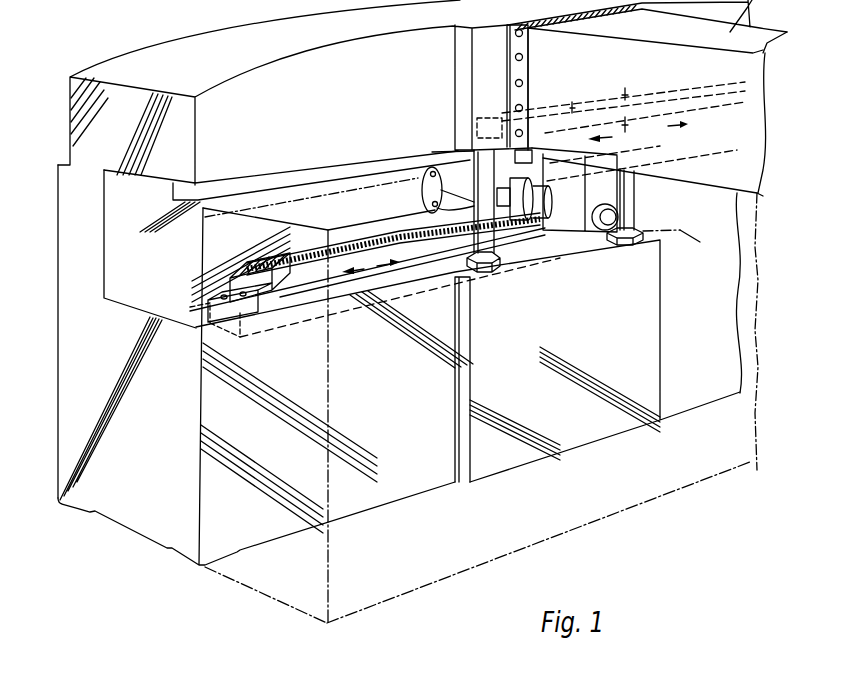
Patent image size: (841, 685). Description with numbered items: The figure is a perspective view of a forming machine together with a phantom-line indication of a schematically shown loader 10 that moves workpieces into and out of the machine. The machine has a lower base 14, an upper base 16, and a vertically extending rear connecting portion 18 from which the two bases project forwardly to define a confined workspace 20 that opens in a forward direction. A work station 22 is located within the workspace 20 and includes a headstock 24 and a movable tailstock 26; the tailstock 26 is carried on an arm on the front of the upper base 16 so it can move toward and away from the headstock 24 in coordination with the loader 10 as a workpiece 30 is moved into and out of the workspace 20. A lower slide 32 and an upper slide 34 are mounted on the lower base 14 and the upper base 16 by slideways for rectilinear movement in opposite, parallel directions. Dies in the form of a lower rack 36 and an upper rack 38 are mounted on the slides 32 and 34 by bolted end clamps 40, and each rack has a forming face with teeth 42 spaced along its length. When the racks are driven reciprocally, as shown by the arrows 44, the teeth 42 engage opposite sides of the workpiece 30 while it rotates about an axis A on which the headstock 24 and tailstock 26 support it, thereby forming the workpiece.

The loader 10 is at (283, 613).
The lower base 14 is at (132, 507).
The upper base 16 is at (133, 103).
The rear connecting portion 18 is at (70, 281).
The workspace 20 is at (152, 275).
The work station 22 is at (412, 185).
The headstock 24 is at (455, 175).
The tailstock 26 is at (577, 193).
The workpiece 30 is at (535, 223).
The lower slide 32 is at (416, 305).
The upper slide 34 is at (573, 98).
The lower rack 36 is at (452, 250).
The upper rack 38 is at (701, 170).
The bolted end clamps 40 is at (530, 157).
The teeth 42 is at (393, 238).
The arrows 44 is at (629, 92).
The axis A is at (680, 230).